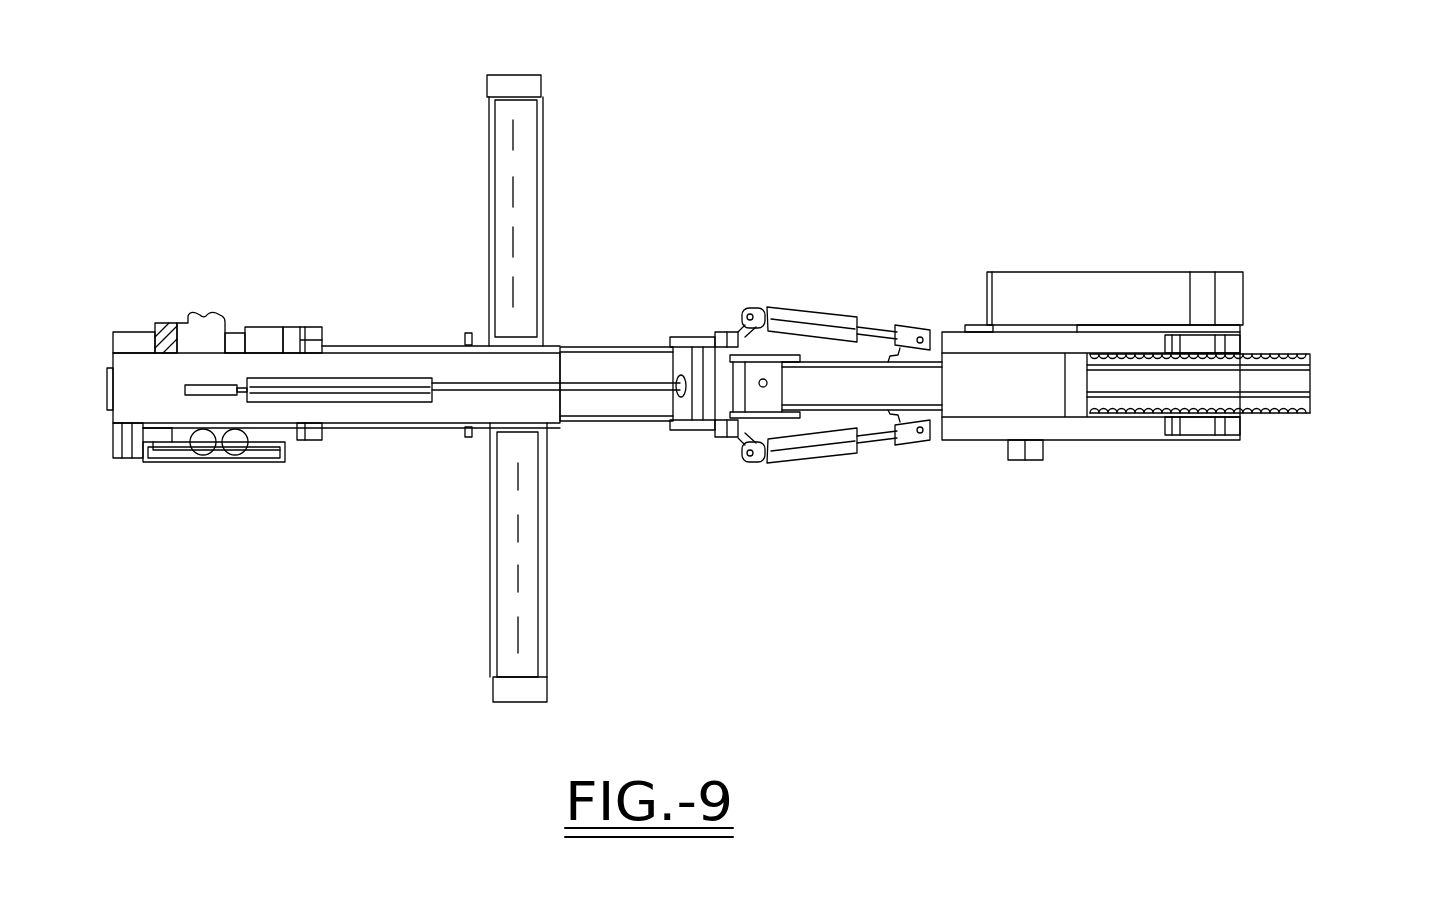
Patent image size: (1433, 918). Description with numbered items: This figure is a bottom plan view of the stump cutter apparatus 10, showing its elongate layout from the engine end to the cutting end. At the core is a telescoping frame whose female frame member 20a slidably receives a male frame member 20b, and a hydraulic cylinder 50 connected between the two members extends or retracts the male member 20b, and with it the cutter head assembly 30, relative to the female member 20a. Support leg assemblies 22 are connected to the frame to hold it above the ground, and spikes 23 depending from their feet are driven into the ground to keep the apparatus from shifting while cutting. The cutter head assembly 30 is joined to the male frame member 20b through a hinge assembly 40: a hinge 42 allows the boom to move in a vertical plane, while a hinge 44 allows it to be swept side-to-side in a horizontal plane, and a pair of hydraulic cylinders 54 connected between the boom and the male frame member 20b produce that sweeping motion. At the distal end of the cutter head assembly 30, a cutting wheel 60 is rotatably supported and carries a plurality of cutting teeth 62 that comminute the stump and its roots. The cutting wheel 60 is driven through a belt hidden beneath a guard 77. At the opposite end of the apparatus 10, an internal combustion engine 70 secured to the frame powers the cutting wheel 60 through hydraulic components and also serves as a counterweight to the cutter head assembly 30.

The stump cutter apparatus 10 is at (798, 176).
The female frame member 20a is at (400, 424).
The male frame member 20b is at (633, 422).
The support leg assembly 22 is at (550, 175).
The spike 23 is at (512, 143).
The cutter head assembly 30 is at (981, 452).
The hinge assembly 40 is at (696, 298).
The hinge 42 is at (677, 336).
The hinge 44 is at (767, 383).
The hydraulic cylinder 50 is at (347, 378).
The hydraulic cylinders 54 is at (848, 310).
The cutting wheel 60 is at (1308, 383).
The cutting teeth 62 is at (1309, 356).
The engine 70 is at (193, 462).
The guard 77 is at (1140, 272).